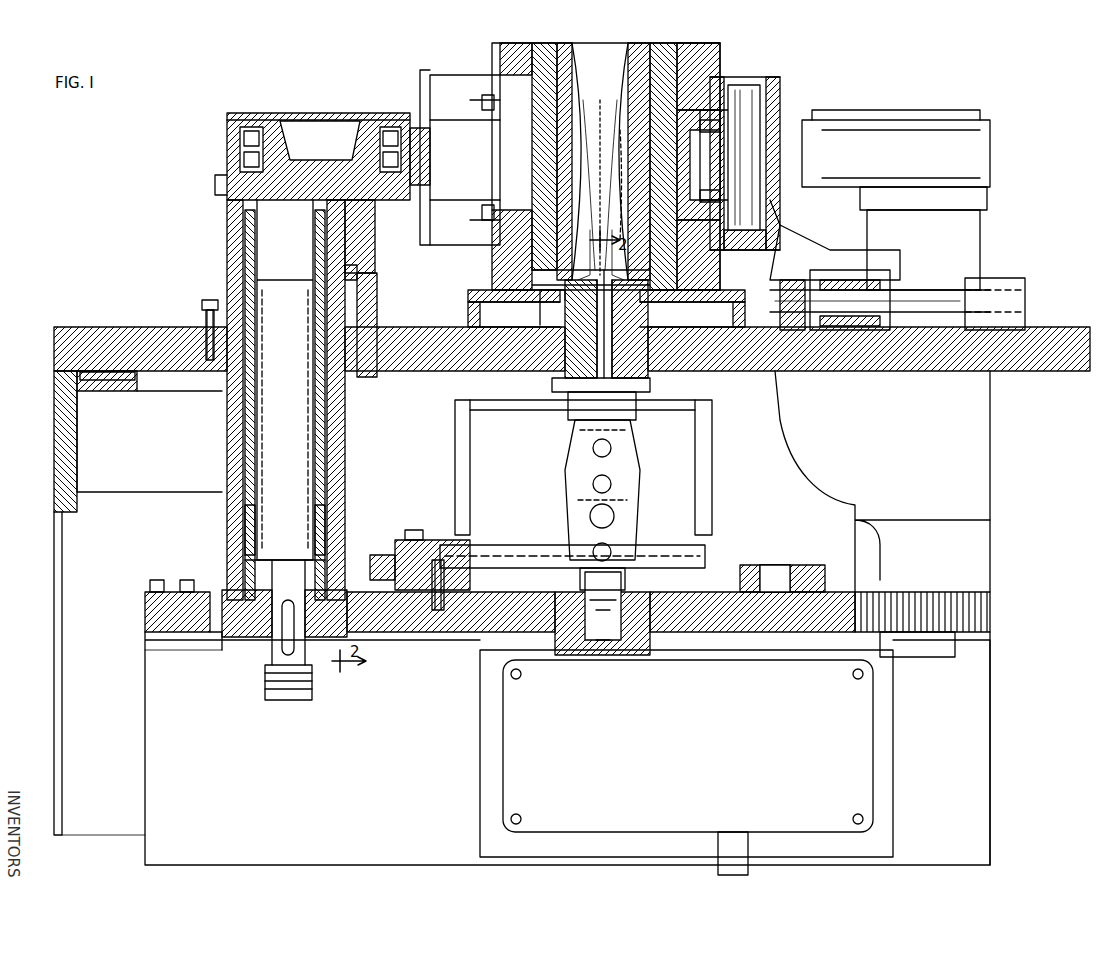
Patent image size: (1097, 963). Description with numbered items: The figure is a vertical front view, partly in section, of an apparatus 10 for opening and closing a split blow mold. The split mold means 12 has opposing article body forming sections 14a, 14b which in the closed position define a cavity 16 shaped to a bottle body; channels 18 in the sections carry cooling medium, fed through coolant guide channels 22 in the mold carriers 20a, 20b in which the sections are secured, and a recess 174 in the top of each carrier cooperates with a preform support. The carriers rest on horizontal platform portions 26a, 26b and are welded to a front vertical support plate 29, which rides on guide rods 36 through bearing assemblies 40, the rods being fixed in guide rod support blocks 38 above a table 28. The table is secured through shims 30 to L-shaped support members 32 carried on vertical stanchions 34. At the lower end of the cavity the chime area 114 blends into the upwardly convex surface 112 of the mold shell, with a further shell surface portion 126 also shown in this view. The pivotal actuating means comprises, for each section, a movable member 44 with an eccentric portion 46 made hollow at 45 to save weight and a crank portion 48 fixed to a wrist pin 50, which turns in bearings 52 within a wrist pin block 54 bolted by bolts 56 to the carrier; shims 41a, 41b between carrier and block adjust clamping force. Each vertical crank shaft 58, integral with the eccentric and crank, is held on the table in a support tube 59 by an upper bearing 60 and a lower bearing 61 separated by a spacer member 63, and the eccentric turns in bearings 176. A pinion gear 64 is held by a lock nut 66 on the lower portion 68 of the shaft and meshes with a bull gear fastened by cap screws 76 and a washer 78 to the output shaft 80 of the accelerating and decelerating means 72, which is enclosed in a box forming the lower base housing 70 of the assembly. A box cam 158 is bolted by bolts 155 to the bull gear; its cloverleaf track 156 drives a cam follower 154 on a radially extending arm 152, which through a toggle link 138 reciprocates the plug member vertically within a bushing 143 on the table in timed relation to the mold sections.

The apparatus 10 is at (964, 68).
The split mold means 12 is at (645, 45).
The article body forming section 14a is at (568, 45).
The article body forming section 14b is at (640, 45).
The cavity 16 is at (592, 100).
The channels 18 is at (548, 45).
The mold carrier 20a is at (500, 50).
The mold carrier 20b is at (700, 48).
The coolant guide channels 22 is at (515, 45).
The horizontal platform portion 26a is at (475, 292).
The horizontal platform portion 26b is at (760, 260).
The table 28 is at (103, 335).
The front vertical support plate 29 is at (832, 250).
The shims 30 is at (90, 372).
The L-shaped support members 32 is at (78, 422).
The vertical stanchions 34 is at (54, 437).
The guide rods 36 is at (960, 312).
The guide rod support blocks 38 is at (1025, 322).
The bearing assemblies 40 is at (878, 328).
The shim 41a is at (470, 200).
The shim 41b is at (735, 100).
The movable member 44 is at (332, 113).
The hollow 45 is at (294, 125).
The eccentric portion 46 is at (388, 127).
The crank portion 48 is at (415, 128).
The wrist pin 50 is at (770, 80).
The bearings 52 is at (766, 198).
The wrist pin block 54 is at (392, 635).
The bolts 56 is at (655, 180).
The vertical crank shaft 58 is at (262, 505).
The support tube 59 is at (227, 262).
The upper bearing 60 is at (325, 525).
The lower bearing 61 is at (345, 236).
The spacer member 63 is at (245, 243).
The pinion gear 64 is at (240, 637).
The lock nut 66 is at (305, 680).
The lower portion 68 is at (275, 648).
The base housing 70 is at (470, 650).
The means for imparting accelerating and decelerating motion 72 is at (480, 740).
The cap screws 76 is at (630, 568).
The washer 78 is at (578, 575).
The output shaft 80 is at (622, 618).
The upwardly convex surface 112 is at (600, 250).
The chime area 114 is at (586, 230).
The surface 126 is at (620, 262).
The toggle link 138 is at (622, 475).
The bushing 143 is at (655, 318).
The radially extending arm 152 is at (700, 424).
The cam follower 154 is at (420, 548).
The bolts 155 is at (445, 600).
The track 156 is at (772, 568).
The box cam 158 is at (800, 568).
The recess 174 is at (690, 48).
The bearings 176 is at (245, 128).